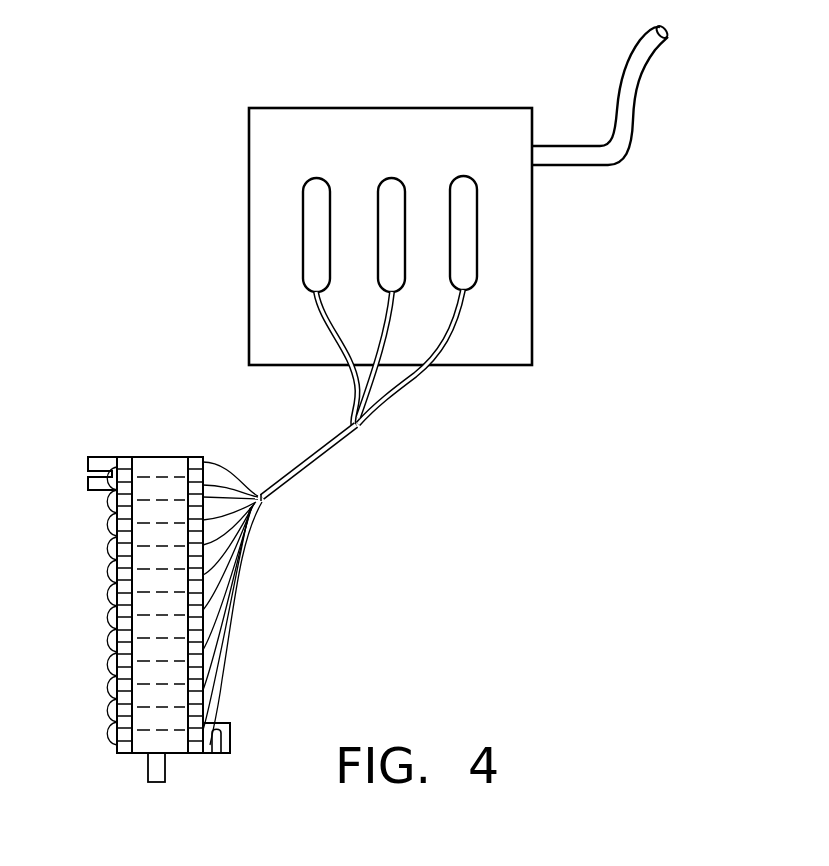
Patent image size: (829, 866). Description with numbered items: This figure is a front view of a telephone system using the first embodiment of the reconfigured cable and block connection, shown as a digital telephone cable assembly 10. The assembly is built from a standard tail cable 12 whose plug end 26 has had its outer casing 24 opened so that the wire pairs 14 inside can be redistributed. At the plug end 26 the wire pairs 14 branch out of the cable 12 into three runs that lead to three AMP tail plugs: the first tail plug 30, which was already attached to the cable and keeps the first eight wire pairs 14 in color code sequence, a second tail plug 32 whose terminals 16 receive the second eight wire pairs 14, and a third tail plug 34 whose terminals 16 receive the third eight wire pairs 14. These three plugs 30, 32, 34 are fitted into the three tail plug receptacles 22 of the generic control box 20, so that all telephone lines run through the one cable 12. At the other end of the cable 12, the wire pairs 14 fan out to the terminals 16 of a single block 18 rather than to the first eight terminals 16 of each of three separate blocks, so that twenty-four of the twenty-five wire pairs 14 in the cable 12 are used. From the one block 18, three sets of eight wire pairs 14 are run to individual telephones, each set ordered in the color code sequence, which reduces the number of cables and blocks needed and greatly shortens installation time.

The digital telephone cable assembly 10 is at (188, 295).
The tail cable 12 is at (319, 447).
The wire pairs 14 is at (383, 336).
The terminals 16 is at (123, 457).
The block 18 is at (145, 457).
The generic control box 20 is at (532, 293).
The tail plug receptacles 22 is at (300, 218).
The outer casing 24 is at (305, 470).
The plug end 26 is at (351, 430).
The first tail plug 30 is at (311, 177).
The second tail plug 32 is at (394, 176).
The third tail plug 34 is at (462, 176).